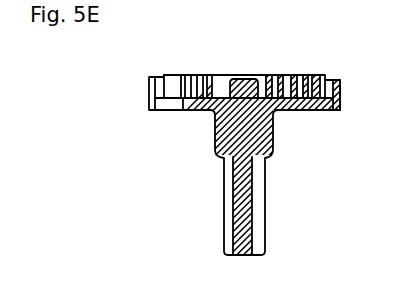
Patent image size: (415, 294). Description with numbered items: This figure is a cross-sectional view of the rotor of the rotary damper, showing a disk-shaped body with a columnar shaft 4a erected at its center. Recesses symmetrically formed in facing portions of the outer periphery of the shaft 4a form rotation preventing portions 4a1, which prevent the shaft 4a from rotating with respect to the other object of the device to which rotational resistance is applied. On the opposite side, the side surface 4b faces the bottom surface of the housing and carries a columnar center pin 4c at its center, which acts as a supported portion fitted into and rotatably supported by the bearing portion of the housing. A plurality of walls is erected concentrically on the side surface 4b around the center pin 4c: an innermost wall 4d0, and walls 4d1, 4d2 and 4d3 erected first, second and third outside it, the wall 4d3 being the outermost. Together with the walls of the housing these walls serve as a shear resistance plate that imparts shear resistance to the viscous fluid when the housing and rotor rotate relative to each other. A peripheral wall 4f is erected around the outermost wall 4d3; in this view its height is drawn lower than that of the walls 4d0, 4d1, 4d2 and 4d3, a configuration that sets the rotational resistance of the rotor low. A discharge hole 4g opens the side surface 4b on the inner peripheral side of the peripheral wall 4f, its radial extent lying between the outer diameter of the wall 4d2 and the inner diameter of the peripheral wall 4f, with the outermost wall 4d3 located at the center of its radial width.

The shaft 4a is at (230, 141).
The rotation preventing portion 4a1 is at (224, 216).
The side surface 4b is at (315, 75).
The center pin 4c is at (243, 80).
The innermost wall 4d0 is at (213, 77).
The wall 4d1 is at (200, 75).
The wall 4d2 is at (188, 75).
The outermost wall 4d3 is at (172, 75).
The peripheral wall 4f is at (337, 80).
The discharge hole 4g is at (173, 106).